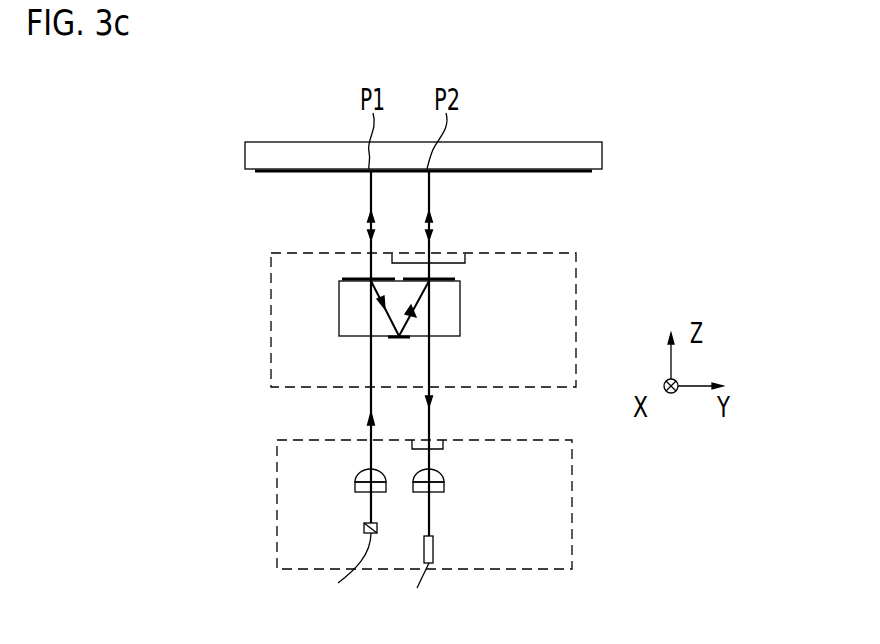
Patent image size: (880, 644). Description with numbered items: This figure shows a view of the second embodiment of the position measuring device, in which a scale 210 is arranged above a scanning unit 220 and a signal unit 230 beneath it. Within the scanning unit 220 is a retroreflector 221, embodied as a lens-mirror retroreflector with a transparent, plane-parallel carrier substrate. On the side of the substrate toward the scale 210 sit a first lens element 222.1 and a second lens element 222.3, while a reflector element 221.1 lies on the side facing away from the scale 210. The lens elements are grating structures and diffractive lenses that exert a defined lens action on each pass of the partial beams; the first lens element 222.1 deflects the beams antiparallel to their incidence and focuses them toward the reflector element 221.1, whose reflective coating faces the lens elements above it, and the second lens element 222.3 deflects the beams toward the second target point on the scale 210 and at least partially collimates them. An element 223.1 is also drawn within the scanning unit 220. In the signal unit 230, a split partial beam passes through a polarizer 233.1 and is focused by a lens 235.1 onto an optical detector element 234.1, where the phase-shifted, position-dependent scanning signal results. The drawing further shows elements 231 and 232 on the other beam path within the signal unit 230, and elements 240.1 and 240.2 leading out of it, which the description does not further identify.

The scale 210 is at (616, 162).
The scanning unit 220 is at (594, 285).
The retroreflector 221 is at (458, 292).
The reflector element 221.1 is at (400, 339).
The first lens element 222.1 is at (355, 278).
The second lens element 222.3 is at (446, 279).
The retroreflector / prism element 223.1 is at (455, 255).
The signal unit 230 is at (588, 511).
The light source 231 is at (362, 526).
The collimating lens 232 is at (358, 484).
The polarizer 233.1 is at (437, 447).
The optical detector element 234.1 is at (436, 547).
The lens 235.1 is at (445, 484).
The light guide / fiber 240.1 is at (366, 565).
The light guide / fiber 240.2 is at (428, 570).